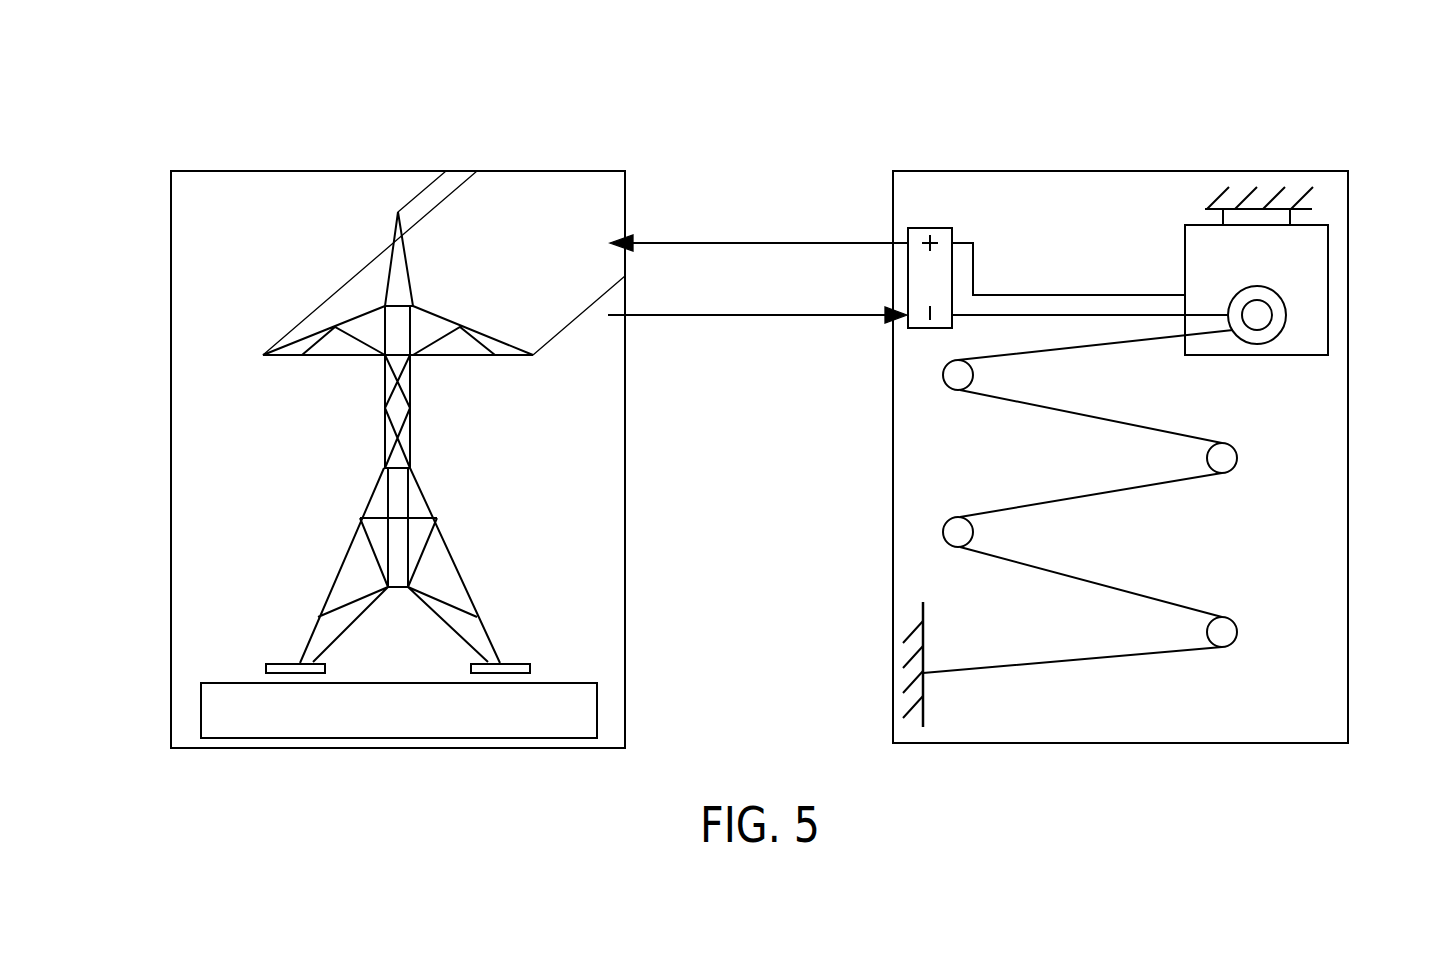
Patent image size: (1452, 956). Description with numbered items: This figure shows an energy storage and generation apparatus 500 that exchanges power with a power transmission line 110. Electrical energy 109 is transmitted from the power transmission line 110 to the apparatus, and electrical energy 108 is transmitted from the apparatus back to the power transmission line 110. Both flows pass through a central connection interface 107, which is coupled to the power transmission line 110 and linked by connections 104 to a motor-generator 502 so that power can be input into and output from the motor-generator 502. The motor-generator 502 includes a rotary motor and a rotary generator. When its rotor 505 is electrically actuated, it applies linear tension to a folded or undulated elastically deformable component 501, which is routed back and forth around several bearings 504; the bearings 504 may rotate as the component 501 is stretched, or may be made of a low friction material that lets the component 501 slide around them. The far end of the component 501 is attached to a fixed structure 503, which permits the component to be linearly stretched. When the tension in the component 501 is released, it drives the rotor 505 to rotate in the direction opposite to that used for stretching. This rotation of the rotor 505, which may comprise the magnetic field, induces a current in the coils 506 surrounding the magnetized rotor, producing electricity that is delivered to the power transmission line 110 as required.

The power transmission line 110 is at (578, 170).
The energy storage and generation apparatus 500 is at (1265, 88).
The electrical energy 108 is at (750, 243).
The electrical energy 109 is at (707, 317).
The central connection interface 107 is at (940, 228).
The connections 104 is at (968, 243).
The motor-generator 502 is at (1197, 248).
The coils 506 is at (1277, 289).
The rotor 505 is at (1272, 318).
The elastically deformable component 501 is at (1133, 592).
The bearings 504 is at (943, 378).
The structure 503 is at (906, 651).